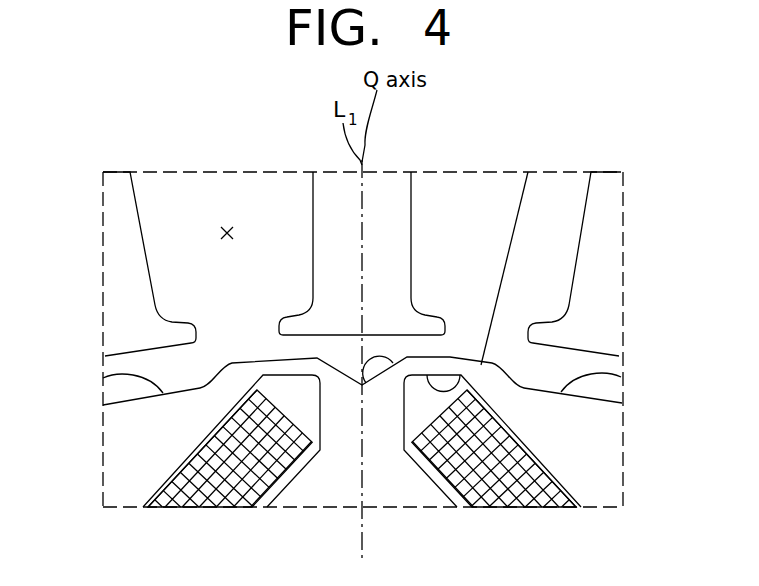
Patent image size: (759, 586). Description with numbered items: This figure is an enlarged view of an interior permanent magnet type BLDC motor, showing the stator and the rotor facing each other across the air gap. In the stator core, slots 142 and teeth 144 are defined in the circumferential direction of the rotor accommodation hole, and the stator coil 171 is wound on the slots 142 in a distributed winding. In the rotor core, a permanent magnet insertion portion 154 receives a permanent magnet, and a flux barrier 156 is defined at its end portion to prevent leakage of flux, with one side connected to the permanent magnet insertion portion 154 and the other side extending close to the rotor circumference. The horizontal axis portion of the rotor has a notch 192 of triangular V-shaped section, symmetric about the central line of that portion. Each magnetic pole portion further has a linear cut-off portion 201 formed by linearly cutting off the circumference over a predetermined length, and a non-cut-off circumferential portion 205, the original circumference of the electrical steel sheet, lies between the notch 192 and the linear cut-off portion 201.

The slot 142 is at (227, 226).
The tooth 144 is at (398, 263).
The permanent magnet insertion portion 154 is at (557, 495).
The flux barrier 156 is at (460, 373).
The coil 171 is at (517, 455).
The notch 192 is at (368, 385).
The linear cut-off portion 201 is at (103, 380).
The non-cut-off circumferential portion 205 is at (528, 172).